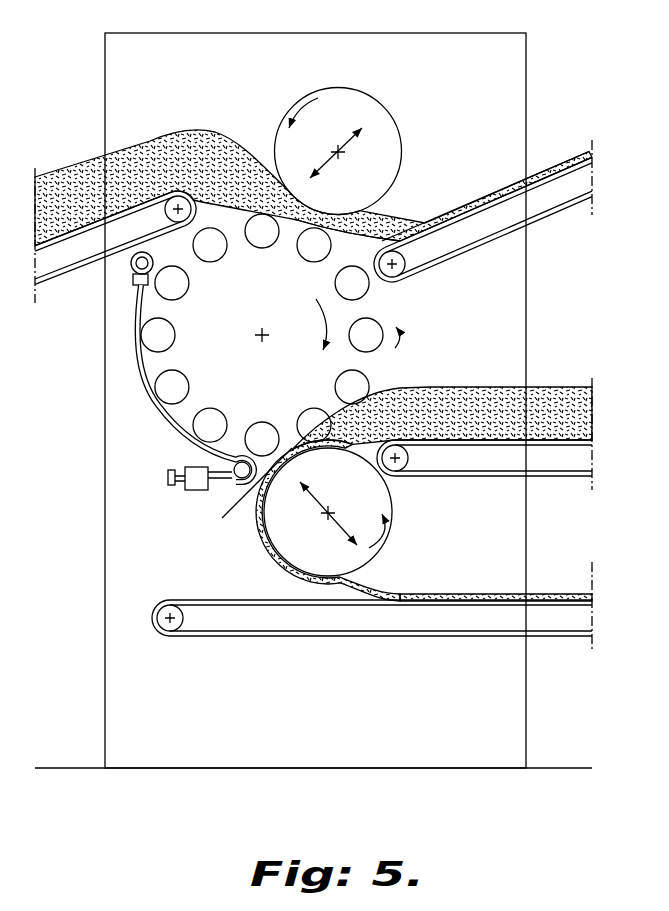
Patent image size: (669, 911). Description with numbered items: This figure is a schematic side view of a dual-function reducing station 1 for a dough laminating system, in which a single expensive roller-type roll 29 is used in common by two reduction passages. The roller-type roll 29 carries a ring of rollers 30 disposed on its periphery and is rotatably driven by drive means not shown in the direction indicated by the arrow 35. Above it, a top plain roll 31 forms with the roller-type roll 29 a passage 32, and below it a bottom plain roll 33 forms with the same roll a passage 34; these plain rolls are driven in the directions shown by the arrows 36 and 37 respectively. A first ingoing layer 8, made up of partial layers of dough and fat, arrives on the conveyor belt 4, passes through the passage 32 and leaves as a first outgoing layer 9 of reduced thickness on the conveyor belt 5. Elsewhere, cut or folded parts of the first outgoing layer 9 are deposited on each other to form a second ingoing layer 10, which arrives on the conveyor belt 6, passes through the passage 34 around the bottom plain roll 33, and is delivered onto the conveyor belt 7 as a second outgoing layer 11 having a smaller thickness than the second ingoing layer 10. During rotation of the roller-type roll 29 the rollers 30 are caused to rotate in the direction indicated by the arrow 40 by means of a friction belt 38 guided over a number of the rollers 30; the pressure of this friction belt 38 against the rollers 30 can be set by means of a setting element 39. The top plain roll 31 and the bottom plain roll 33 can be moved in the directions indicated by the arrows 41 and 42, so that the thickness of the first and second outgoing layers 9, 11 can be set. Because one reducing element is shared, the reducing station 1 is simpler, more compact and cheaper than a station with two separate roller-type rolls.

The reducing station 1 is at (282, 33).
The conveyor belt 4 is at (55, 247).
The conveyor belt 5 is at (560, 211).
The conveyor belt 6 is at (552, 446).
The conveyor belt 7 is at (543, 637).
The first ingoing layer 8 is at (68, 177).
The first outgoing layer 9 is at (565, 160).
The second ingoing layer 10 is at (548, 398).
The second outgoing layer 11 is at (540, 594).
The roller-type roll 29 is at (193, 347).
The rollers 30 is at (173, 379).
The top plain roll 31 is at (365, 105).
The passage 32 is at (350, 222).
The bottom plain roll 33 is at (285, 523).
The passage 34 is at (241, 490).
The arrow 35 is at (322, 333).
The arrow 36 is at (310, 100).
The arrow 37 is at (386, 534).
The friction belt 38 is at (163, 417).
The setting element 39 is at (183, 489).
The arrow 40 is at (396, 346).
The arrow 41 is at (332, 157).
The arrow 42 is at (326, 490).